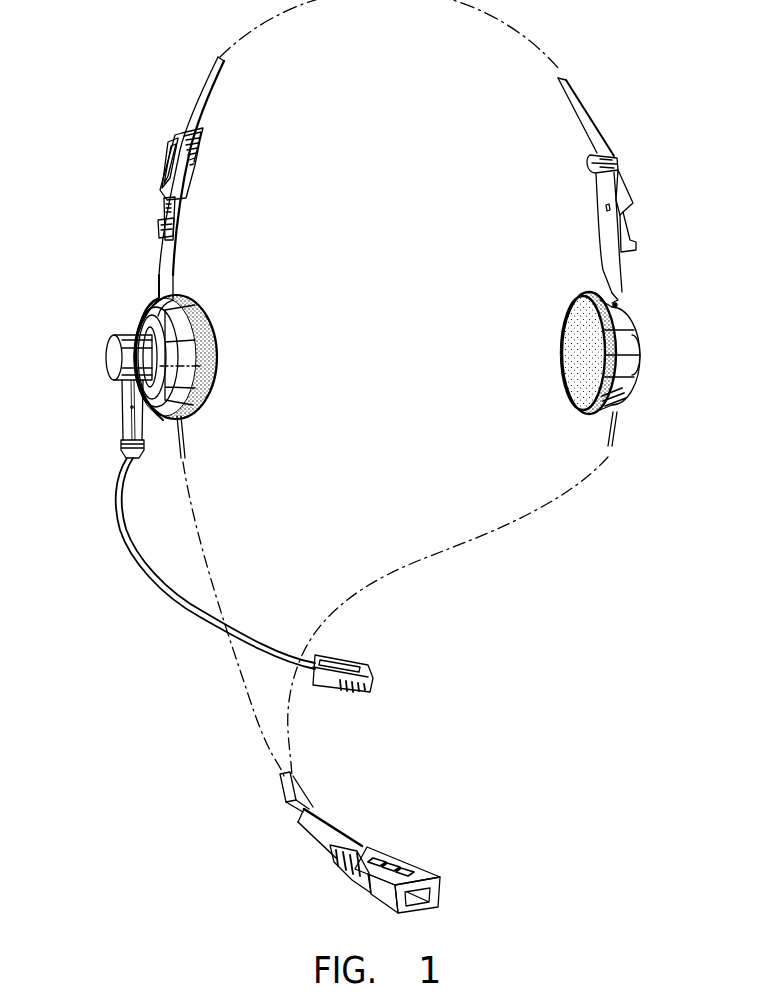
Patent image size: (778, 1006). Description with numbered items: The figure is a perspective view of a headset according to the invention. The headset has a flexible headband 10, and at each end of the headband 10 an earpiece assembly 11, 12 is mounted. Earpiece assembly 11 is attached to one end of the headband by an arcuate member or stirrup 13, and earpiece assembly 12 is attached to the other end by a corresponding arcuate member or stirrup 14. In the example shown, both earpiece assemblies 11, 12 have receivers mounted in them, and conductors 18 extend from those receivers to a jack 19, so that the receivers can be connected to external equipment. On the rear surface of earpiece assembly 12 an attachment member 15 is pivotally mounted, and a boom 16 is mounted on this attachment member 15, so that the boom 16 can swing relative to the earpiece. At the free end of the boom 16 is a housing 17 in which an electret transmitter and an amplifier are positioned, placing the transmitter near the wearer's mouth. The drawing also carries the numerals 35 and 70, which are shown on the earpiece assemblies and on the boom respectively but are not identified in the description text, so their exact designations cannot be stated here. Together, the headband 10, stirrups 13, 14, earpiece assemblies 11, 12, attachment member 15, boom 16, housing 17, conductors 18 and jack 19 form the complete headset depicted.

The flexible headband 10 is at (203, 82).
The earpiece assembly 11 is at (628, 327).
The earpiece assembly 12 is at (206, 312).
The arcuate member or stirrup 13 is at (620, 297).
The arcuate member or stirrup 14 is at (145, 312).
The attachment member 15 is at (108, 355).
The boom 16 is at (190, 613).
The housing 17 is at (365, 661).
The conductors 18 is at (182, 440).
The jack 19 is at (405, 860).
The ear cushion 35 is at (213, 367).
The microphone boom 70 is at (122, 424).